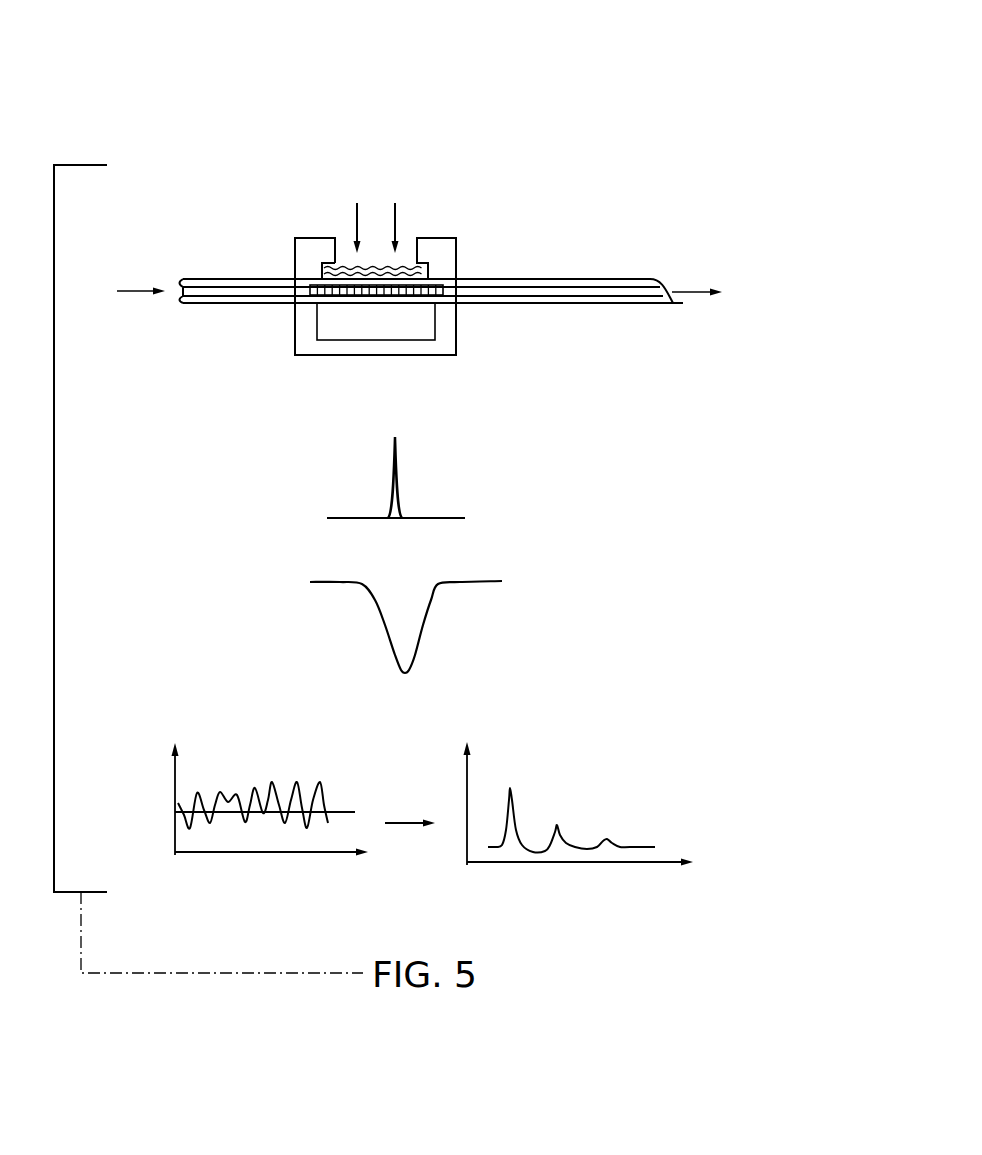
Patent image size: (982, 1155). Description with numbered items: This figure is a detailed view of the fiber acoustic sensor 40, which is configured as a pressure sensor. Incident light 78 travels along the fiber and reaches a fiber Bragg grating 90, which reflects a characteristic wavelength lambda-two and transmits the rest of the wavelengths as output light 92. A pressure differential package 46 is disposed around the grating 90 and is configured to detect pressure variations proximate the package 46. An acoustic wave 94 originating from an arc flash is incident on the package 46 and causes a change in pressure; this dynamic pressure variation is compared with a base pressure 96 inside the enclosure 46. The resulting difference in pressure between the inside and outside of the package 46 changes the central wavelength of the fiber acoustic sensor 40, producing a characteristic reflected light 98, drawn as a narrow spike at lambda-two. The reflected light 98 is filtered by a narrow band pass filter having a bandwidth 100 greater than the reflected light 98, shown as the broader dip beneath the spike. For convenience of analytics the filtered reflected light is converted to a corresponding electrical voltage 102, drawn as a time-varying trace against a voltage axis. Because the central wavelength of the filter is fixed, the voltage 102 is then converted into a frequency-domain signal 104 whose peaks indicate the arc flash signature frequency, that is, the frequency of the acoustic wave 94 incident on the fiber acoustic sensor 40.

The fiber acoustic sensor 40 is at (672, 60).
The pressure differential package 46 is at (308, 238).
The incident light 78 is at (132, 291).
The fiber Bragg grating 90 is at (443, 284).
The output light 92 is at (695, 291).
The acoustic wave 94 is at (409, 184).
The base pressure 96 is at (422, 322).
The reflected light 98 is at (397, 458).
The bandwidth 100 is at (427, 612).
The electrical voltage 102 is at (297, 782).
The frequency-domain signal 104 is at (510, 782).